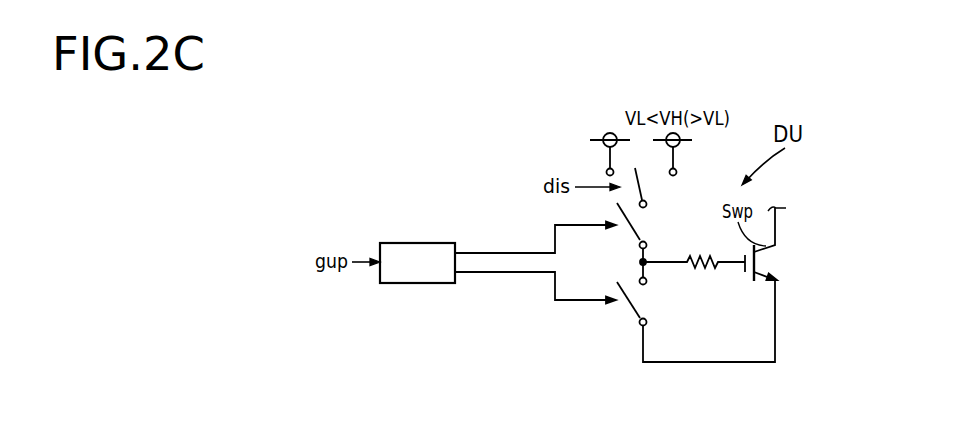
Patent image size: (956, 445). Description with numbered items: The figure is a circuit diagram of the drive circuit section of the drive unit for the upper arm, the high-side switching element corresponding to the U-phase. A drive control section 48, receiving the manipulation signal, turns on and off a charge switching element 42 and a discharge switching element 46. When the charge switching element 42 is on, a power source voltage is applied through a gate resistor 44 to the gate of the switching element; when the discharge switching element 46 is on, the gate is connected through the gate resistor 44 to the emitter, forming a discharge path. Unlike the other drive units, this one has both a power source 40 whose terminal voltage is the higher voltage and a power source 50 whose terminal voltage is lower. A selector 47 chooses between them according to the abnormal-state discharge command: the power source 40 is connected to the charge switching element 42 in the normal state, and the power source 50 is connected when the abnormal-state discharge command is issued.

The power source 40 is at (680, 144).
The charge switching element 42 is at (632, 225).
The gate resistor 44 is at (707, 272).
The discharge switching element 46 is at (632, 308).
The selector 47 is at (657, 196).
The drive control section 48 is at (417, 242).
The power source 50 is at (600, 148).